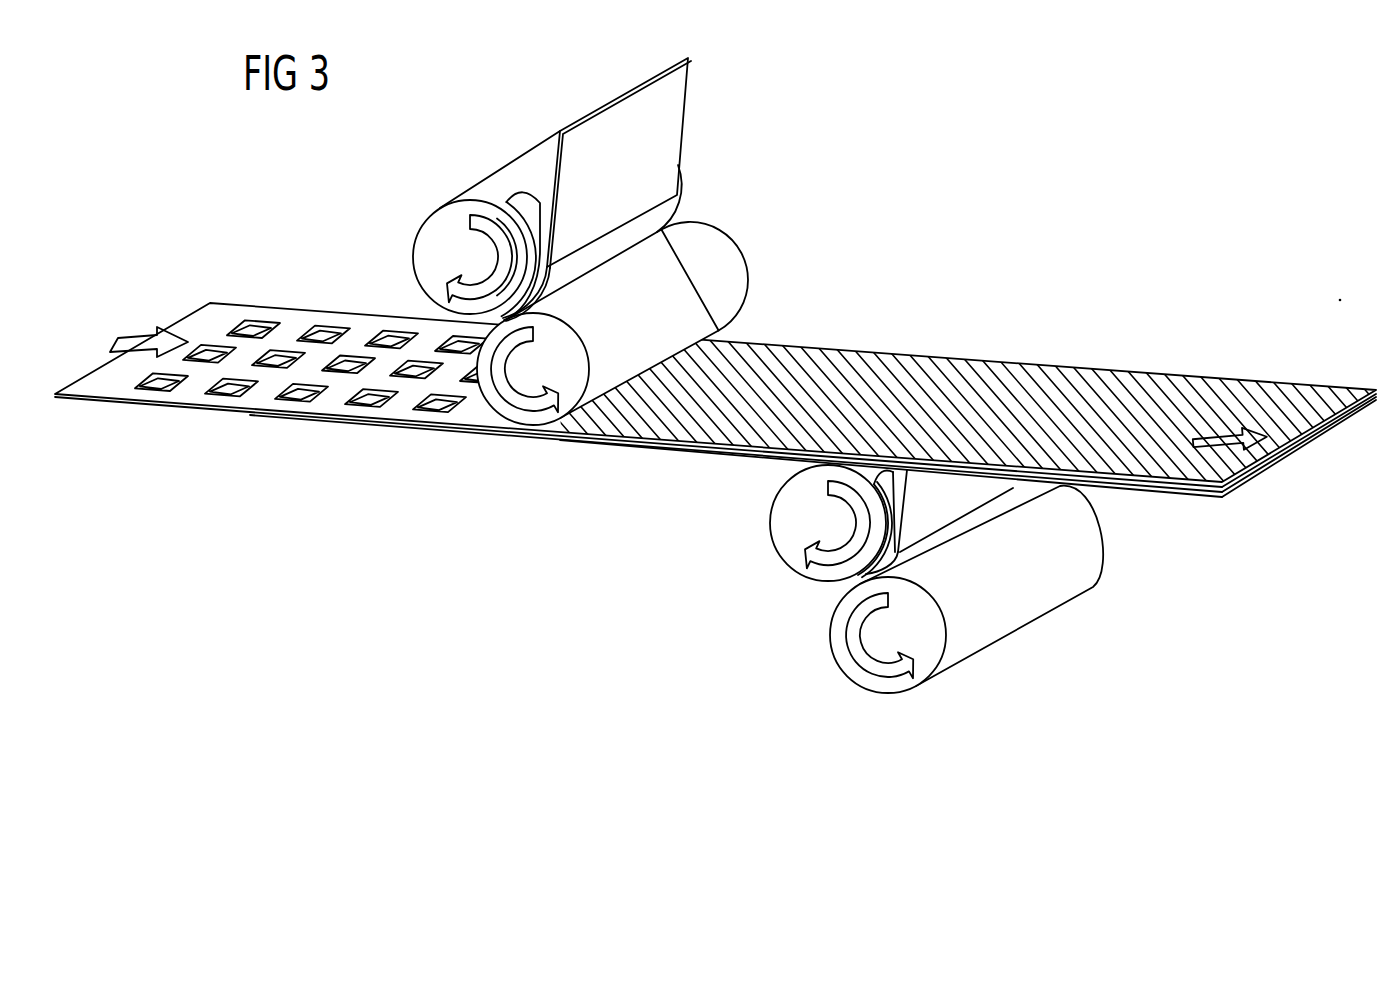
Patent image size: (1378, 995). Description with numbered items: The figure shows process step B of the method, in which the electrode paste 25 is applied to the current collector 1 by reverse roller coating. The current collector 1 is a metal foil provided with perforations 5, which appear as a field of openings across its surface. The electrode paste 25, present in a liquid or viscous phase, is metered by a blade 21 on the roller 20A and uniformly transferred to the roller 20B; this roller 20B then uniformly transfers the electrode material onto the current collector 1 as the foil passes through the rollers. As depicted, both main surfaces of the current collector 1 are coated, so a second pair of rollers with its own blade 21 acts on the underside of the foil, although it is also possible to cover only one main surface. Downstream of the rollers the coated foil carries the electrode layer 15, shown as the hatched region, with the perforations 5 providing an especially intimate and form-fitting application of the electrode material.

The current collector 1 is at (233, 317).
The perforations 5 is at (328, 326).
The electrode layer 15 is at (1284, 426).
The roller 20A is at (441, 238).
The roller 20B is at (712, 257).
The blade 21 is at (668, 110).
The electrode paste 25 is at (535, 196).